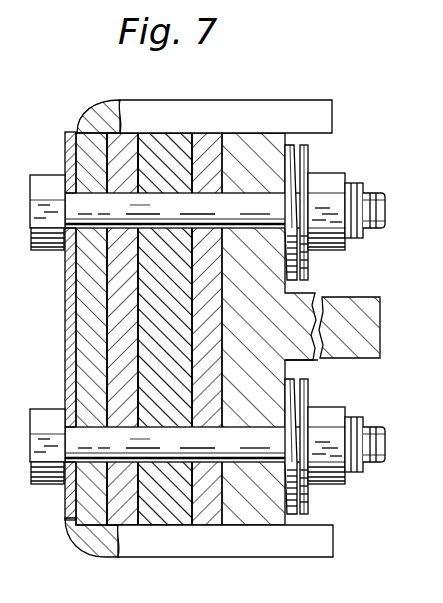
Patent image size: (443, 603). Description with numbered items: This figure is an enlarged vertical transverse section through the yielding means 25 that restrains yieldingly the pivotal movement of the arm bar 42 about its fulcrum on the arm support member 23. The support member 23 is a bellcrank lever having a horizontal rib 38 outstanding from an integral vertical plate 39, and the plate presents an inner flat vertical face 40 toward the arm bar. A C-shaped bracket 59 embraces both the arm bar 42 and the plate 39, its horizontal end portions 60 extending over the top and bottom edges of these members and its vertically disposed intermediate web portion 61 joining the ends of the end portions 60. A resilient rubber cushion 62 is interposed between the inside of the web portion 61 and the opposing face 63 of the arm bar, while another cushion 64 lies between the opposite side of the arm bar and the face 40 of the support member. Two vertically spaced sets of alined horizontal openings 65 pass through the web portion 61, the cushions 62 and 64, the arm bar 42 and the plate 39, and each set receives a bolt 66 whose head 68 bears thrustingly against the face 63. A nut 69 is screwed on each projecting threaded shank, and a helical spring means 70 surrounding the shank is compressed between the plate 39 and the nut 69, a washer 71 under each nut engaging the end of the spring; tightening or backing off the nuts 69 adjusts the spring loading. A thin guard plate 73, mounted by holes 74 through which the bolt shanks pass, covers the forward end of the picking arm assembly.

The yielding means 25 is at (305, 93).
The arm support member 23 is at (339, 358).
The horizontal rib 38 is at (352, 298).
The vertical plate 39 is at (250, 140).
The inner flat vertical face 40 is at (228, 150).
The arm bar 42 is at (165, 140).
The C-shaped bracket 59 is at (80, 547).
The horizontal end portions 60 is at (278, 107).
The intermediate web portion 61 is at (80, 355).
The cushion 62 is at (128, 520).
The face of arm bar 63 is at (143, 512).
The cushion 64 is at (207, 517).
The alined horizontal openings 65 is at (150, 195).
The bolt 66 is at (246, 214).
The bolt head 68 is at (46, 178).
The nut 69 is at (334, 181).
The spring means 70 is at (290, 150).
The washer 71 is at (307, 155).
The guard plate 73 is at (70, 305).
The holes 74 is at (70, 196).